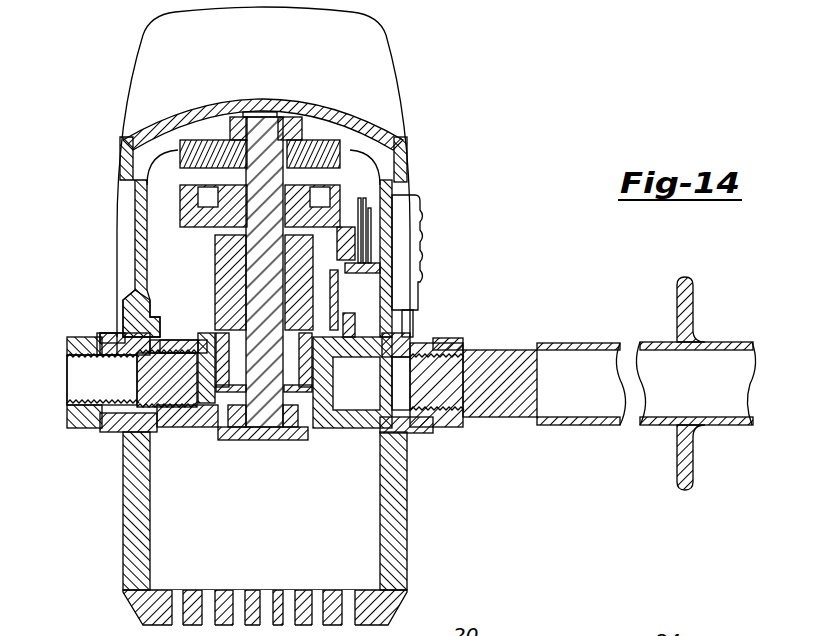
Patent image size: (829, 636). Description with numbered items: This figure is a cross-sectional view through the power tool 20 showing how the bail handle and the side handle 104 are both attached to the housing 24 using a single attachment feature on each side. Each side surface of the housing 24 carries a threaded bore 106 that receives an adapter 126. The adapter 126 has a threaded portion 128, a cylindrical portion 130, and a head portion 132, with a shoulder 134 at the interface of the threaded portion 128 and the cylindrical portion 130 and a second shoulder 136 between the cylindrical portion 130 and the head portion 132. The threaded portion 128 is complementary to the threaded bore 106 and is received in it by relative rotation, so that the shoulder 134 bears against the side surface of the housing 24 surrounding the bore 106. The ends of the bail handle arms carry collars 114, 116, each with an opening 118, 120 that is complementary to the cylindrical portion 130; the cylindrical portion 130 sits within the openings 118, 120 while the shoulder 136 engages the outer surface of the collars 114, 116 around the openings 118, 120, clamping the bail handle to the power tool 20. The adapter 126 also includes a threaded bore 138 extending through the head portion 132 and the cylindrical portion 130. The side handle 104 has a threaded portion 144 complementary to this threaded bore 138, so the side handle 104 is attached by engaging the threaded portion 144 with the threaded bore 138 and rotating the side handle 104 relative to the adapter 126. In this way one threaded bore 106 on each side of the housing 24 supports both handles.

The power tool 20 is at (492, 192).
The housing 24 is at (368, 562).
The side handle 104 is at (590, 345).
The threaded bore 106 is at (182, 423).
The collar 114 is at (420, 330).
The collar 116 is at (109, 334).
The opening 118 is at (420, 350).
The opening 120 is at (177, 345).
The adapter 126 is at (80, 422).
The threaded portion 128 is at (160, 397).
The cylindrical portion 130 is at (117, 358).
The head portion 132 is at (79, 336).
The shoulder 134 is at (162, 335).
The shoulder 136 is at (100, 334).
The threaded bore 138 is at (68, 365).
The threaded portion 144 is at (423, 393).